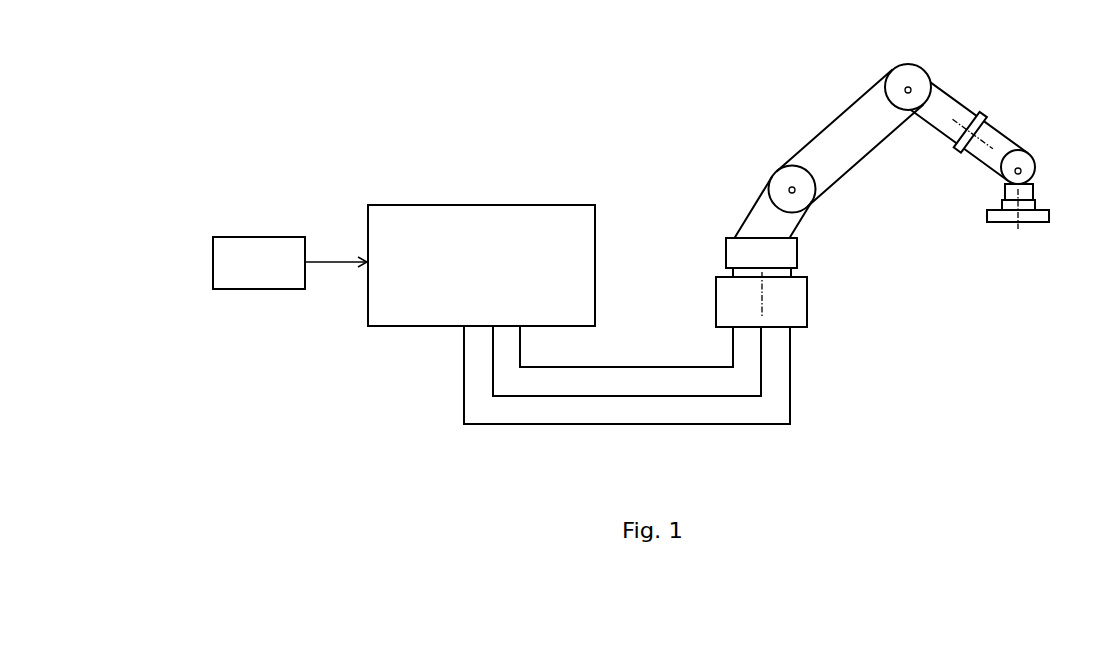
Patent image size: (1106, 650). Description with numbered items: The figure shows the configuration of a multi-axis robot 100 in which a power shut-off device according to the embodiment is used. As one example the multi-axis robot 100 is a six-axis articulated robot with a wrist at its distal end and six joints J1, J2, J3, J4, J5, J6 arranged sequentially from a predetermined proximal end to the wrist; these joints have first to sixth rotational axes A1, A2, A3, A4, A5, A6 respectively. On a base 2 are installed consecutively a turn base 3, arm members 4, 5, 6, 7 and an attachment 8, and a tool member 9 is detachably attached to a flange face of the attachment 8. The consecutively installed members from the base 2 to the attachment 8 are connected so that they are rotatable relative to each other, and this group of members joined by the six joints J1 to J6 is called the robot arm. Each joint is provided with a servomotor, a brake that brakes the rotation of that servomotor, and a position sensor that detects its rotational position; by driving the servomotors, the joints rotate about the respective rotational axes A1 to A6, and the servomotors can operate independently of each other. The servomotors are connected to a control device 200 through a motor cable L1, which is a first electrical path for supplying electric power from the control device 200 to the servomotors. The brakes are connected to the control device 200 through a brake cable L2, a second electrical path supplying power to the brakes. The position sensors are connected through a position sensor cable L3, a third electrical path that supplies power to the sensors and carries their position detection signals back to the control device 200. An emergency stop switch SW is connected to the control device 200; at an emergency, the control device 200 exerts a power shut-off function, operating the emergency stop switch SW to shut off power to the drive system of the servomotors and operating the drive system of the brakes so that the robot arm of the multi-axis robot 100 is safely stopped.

The multi-axis robot 100 is at (938, 46).
The control device 200 is at (565, 205).
The emergency stop switch SW is at (287, 237).
The base 2 is at (716, 308).
The turn base 3 is at (797, 248).
The arm member 4 is at (832, 122).
The arm member 5 is at (942, 92).
The arm member 6 is at (1012, 146).
The arm member 7 is at (1033, 192).
The attachment 8 is at (1035, 205).
The tool member 9 is at (1049, 218).
The first joint J1 is at (726, 242).
The second joint J2 is at (775, 176).
The third joint J3 is at (890, 70).
The fourth joint J4 is at (985, 115).
The fifth joint J5 is at (1005, 188).
The sixth joint J6 is at (1002, 206).
The first rotational axis A1 is at (762, 283).
The second rotational axis A2 is at (793, 183).
The third rotational axis A3 is at (907, 83).
The fourth rotational axis A4 is at (965, 130).
The fifth rotational axis A5 is at (1018, 164).
The sixth rotational axis A6 is at (1018, 217).
The motor cable L1 is at (679, 361).
The brake cable L2 is at (679, 389).
The position sensor cable L3 is at (679, 417).